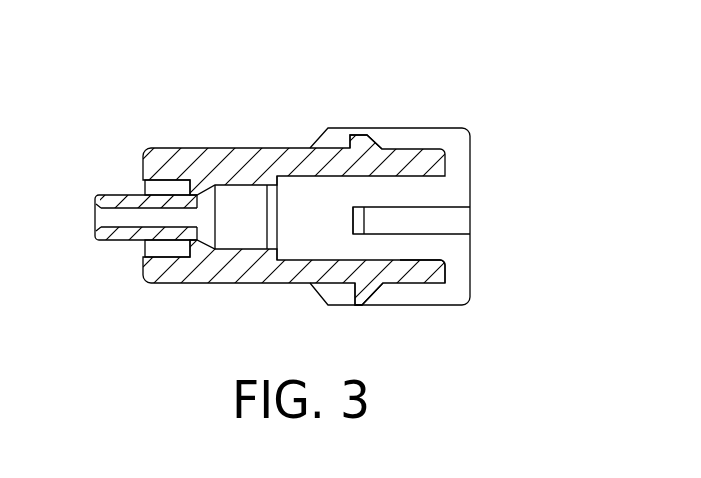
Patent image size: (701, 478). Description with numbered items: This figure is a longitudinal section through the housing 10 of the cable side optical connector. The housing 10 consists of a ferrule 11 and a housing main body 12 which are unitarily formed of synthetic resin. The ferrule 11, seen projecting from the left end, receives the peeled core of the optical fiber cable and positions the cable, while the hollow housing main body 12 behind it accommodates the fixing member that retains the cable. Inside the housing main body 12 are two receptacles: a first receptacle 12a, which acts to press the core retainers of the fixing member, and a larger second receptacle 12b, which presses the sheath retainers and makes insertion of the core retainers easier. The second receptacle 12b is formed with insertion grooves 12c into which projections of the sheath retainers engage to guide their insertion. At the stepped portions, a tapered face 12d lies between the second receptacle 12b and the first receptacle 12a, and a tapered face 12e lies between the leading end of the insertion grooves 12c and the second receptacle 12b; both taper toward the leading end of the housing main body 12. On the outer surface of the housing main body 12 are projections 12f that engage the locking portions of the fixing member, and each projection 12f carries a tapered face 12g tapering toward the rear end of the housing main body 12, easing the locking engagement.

The housing 10 is at (313, 112).
The ferrule 11 is at (110, 197).
The housing main body 12 is at (235, 151).
The first receptacle 12a is at (189, 283).
The second receptacle 12b is at (424, 259).
The insertion grooves 12c is at (438, 217).
The tapered face 12d is at (236, 251).
The tapered face 12e is at (352, 220).
The projections 12f is at (376, 285).
The tapered face 12g is at (381, 148).